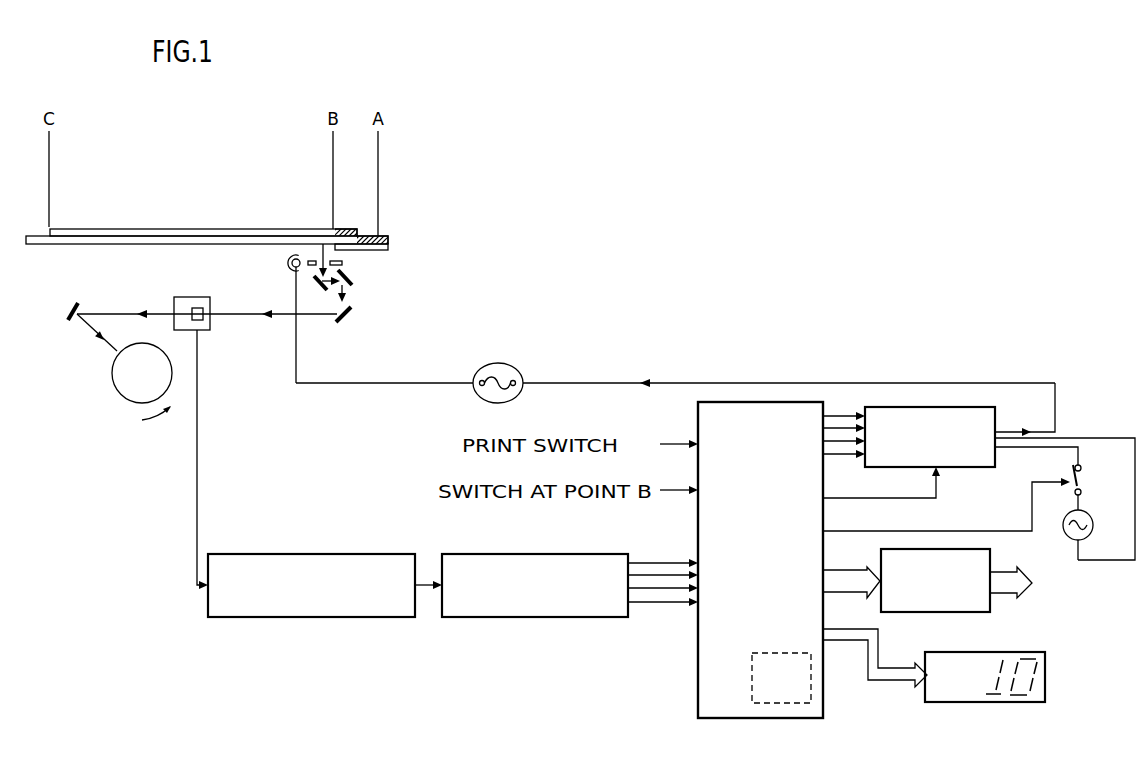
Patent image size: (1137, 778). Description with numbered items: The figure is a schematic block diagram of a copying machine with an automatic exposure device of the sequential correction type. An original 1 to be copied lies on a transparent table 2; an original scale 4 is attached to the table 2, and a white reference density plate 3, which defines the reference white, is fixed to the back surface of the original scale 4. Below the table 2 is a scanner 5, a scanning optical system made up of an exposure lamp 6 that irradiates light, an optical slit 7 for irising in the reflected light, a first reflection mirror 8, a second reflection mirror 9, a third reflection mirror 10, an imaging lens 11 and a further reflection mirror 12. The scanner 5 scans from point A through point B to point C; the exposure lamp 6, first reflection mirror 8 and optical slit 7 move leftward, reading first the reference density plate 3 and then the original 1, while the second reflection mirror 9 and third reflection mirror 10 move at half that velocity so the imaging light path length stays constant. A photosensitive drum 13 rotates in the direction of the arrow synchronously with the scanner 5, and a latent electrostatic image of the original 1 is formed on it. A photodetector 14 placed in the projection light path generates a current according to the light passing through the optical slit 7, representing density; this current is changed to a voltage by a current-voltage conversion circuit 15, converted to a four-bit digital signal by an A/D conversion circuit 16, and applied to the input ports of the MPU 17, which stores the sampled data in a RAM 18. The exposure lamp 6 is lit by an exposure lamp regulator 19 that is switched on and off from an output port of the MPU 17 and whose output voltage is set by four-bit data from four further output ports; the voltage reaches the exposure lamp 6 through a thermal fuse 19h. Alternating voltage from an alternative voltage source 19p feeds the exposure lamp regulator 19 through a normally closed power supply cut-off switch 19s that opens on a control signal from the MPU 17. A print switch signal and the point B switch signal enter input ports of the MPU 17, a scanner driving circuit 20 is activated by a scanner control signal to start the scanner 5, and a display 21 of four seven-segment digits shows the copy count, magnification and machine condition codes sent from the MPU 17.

The original 1 is at (152, 229).
The transparent table 2 is at (86, 245).
The reference density plate 3 is at (368, 251).
The original scale 4 is at (345, 228).
The scanner 5 is at (249, 283).
The exposure lamp 6 is at (293, 258).
The optical slit 7 is at (312, 260).
The first reflection mirror 8 is at (315, 293).
The second reflection mirror 9 is at (353, 278).
The third reflection mirror 10 is at (349, 318).
The imaging lens 11 is at (183, 297).
The reflection mirror 12 is at (68, 322).
The photosensitive drum 13 is at (116, 392).
The photodetector 14 is at (208, 322).
The current-voltage conversion circuit 15 is at (327, 617).
The A/D conversion circuit 16 is at (488, 617).
The microprocessor (MPU) 17 is at (803, 719).
The RAM 18 is at (812, 690).
The exposure lamp regulator 19 is at (978, 467).
The thermal fuse 19h is at (522, 373).
The power supply cut-off switch 19s is at (1082, 477).
The alternative voltage source 19p is at (1093, 524).
The scanner driving circuit 20 is at (993, 560).
The display 21 is at (972, 703).